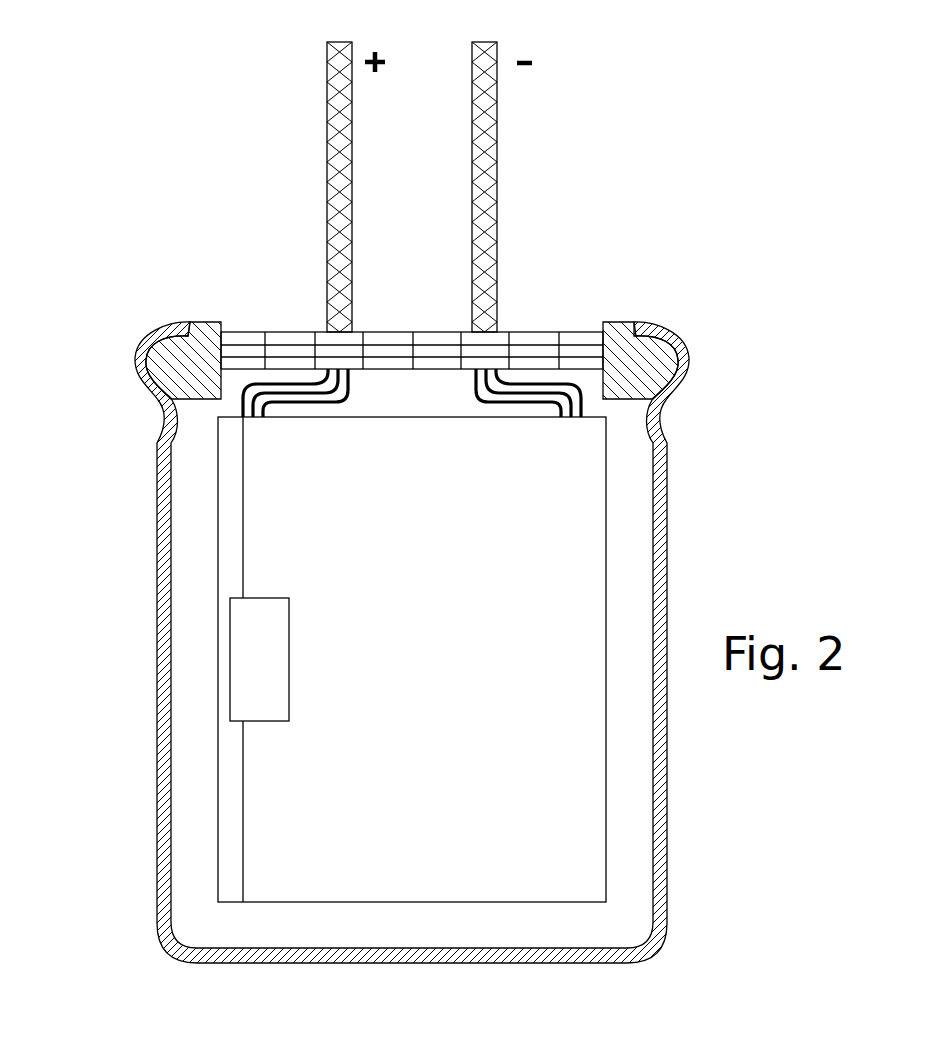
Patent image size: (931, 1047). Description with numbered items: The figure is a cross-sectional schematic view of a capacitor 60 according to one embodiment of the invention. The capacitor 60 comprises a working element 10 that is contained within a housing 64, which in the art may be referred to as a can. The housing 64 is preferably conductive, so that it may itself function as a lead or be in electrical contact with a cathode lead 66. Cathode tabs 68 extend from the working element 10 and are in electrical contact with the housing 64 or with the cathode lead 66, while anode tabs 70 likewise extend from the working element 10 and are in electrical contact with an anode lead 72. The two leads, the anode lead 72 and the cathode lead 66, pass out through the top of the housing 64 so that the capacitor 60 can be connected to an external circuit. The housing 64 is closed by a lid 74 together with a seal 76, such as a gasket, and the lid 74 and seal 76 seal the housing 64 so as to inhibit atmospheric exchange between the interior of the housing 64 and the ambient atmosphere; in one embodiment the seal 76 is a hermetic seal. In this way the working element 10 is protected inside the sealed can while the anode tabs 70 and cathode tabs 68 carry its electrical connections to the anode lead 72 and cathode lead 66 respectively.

The working element 10 is at (297, 833).
The capacitor 60 is at (418, 502).
The housing 64 is at (165, 534).
The cathode lead 66 is at (484, 147).
The cathode tabs 68 is at (490, 398).
The anode tabs 70 is at (328, 390).
The anode lead 72 is at (340, 146).
The lid 74 is at (395, 340).
The seal 76 is at (651, 367).